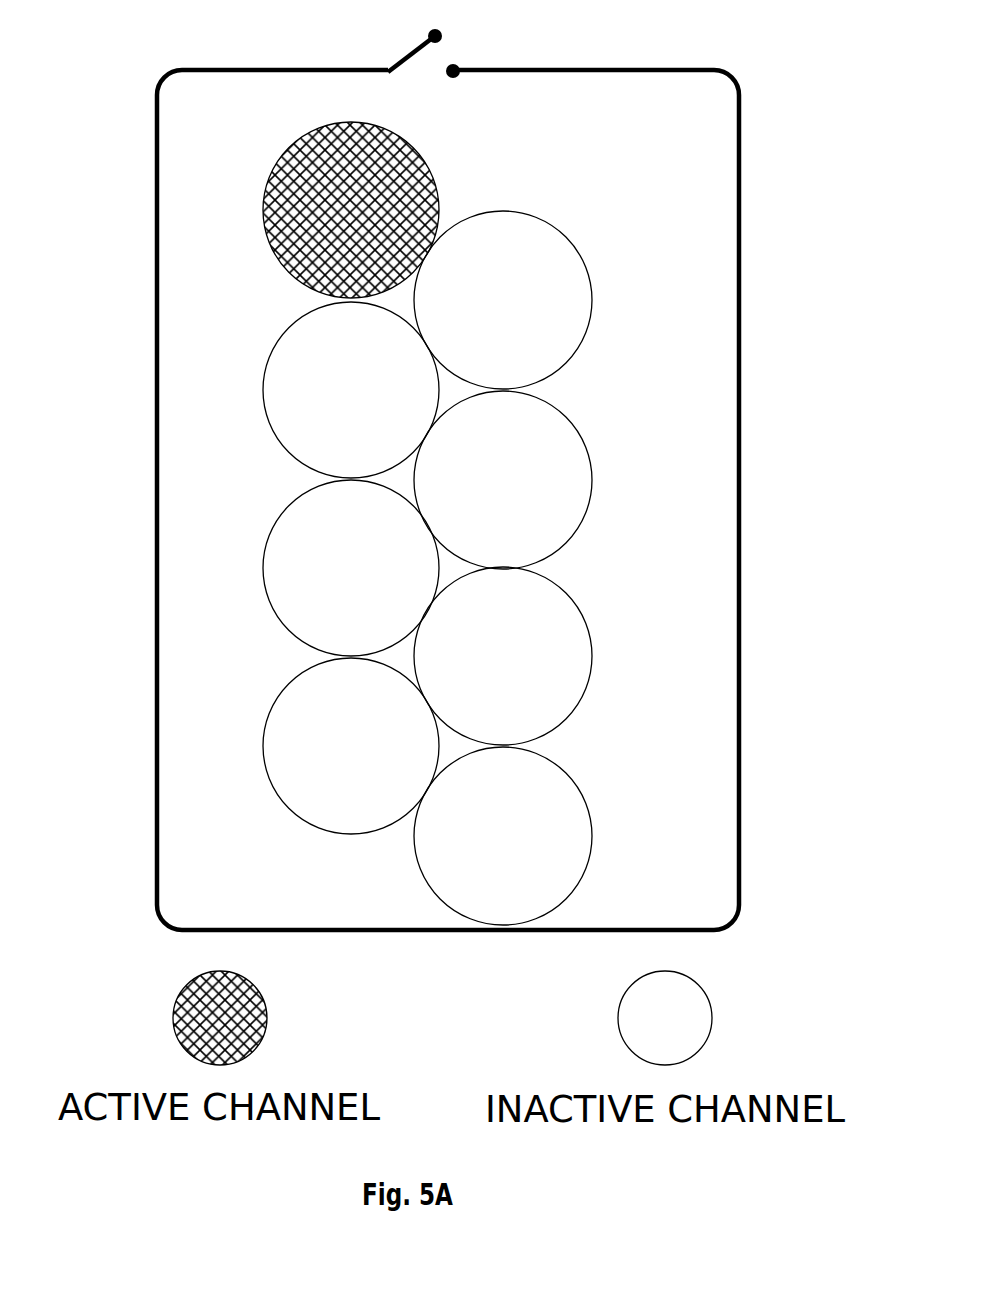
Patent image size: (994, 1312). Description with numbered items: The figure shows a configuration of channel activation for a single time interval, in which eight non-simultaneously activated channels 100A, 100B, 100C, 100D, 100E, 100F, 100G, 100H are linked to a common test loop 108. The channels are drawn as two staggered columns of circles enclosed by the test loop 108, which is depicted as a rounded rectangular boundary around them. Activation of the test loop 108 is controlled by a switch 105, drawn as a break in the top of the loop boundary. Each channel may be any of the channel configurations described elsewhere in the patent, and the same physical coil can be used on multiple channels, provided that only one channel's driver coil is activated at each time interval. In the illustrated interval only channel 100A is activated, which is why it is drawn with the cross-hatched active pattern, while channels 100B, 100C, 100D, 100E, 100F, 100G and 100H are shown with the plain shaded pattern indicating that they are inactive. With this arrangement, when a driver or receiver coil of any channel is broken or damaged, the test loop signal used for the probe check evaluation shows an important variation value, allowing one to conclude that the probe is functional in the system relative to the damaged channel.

The switch 105 is at (443, 41).
The test loop 108 is at (739, 250).
The channel 100A is at (299, 149).
The channel 100B is at (560, 262).
The channel 100C is at (314, 343).
The channel 100D is at (558, 447).
The channel 100E is at (294, 522).
The channel 100F is at (558, 617).
The channel 100G is at (294, 708).
The channel 100H is at (557, 802).